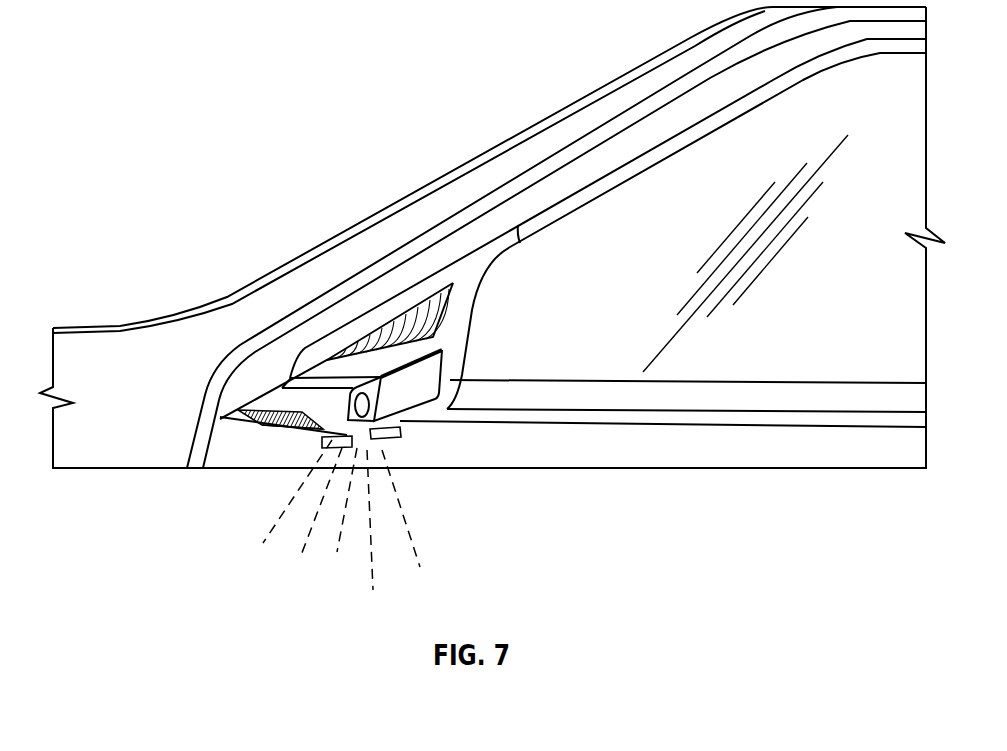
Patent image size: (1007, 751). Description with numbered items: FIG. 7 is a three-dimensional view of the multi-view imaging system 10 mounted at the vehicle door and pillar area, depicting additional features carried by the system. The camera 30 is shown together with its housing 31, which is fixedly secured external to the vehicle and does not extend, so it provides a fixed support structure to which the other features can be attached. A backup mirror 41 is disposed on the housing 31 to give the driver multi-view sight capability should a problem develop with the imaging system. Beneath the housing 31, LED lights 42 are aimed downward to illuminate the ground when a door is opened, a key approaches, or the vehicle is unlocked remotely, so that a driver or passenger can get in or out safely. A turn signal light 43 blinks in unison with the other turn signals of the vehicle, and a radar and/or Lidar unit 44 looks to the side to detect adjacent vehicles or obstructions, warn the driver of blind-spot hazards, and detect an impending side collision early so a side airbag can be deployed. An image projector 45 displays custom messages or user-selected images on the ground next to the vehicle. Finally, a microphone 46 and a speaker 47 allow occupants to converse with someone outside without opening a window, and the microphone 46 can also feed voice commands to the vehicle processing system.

The multi-view imaging system 10 is at (492, 253).
The camera 30 is at (365, 405).
The housing 31 is at (398, 353).
The backup mirror 41 is at (430, 378).
The LED lights 42 is at (333, 447).
The turn signal light 43 is at (247, 418).
The radar and/or Lidar unit 44 is at (283, 405).
The image projector 45 is at (395, 440).
The microphone 46 is at (282, 420).
The speaker 47 is at (432, 322).